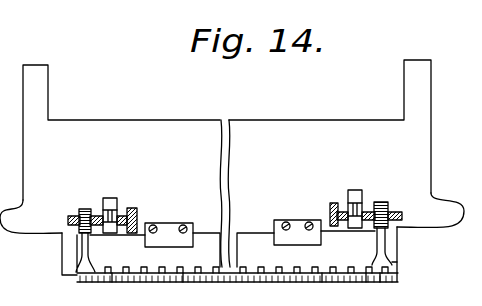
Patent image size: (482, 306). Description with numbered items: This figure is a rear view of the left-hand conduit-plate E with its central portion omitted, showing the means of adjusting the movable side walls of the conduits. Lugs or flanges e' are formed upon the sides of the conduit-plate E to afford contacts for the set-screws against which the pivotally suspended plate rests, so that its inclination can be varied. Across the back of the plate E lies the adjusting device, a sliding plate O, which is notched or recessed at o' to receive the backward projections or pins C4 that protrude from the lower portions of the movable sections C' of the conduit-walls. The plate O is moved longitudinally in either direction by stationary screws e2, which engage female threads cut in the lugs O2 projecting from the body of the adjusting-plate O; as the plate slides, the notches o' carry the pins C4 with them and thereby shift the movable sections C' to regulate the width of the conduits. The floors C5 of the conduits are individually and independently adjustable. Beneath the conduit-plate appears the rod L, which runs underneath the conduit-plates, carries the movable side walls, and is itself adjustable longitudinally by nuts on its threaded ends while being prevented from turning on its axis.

The left-hand conduit-plate E is at (227, 163).
The lug or flange e' is at (232, 213).
The stationary screw e2 is at (237, 218).
The lug of adjusting-plate O2 is at (234, 204).
The adjusting device or sliding plate O is at (237, 251).
The notch or recess o' is at (246, 255).
The backward projection or pin C4 is at (104, 282).
The conduit floor C5 is at (114, 282).
The movable section of conduit-wall C' is at (361, 289).
The rod L is at (38, 254).